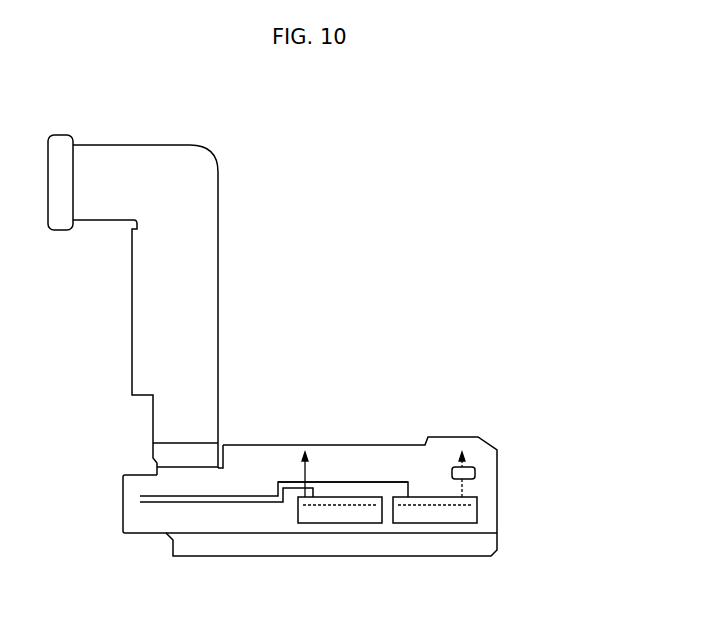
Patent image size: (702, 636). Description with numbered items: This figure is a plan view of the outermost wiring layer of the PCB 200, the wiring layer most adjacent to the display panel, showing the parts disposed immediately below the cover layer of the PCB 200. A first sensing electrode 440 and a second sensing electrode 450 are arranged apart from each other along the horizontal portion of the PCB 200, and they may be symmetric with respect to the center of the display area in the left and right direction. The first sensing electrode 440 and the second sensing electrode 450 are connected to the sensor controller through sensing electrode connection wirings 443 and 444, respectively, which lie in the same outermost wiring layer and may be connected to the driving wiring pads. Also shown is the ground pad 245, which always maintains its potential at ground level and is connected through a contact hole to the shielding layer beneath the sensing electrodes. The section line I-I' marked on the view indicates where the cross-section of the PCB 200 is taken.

The PCB 200 is at (312, 210).
The ground pad 245 is at (476, 472).
The first sensing electrode 440 is at (338, 512).
The sensing electrode connection wiring 443 is at (229, 504).
The sensing electrode connection wiring 444 is at (360, 482).
The second sensing electrode 450 is at (437, 512).